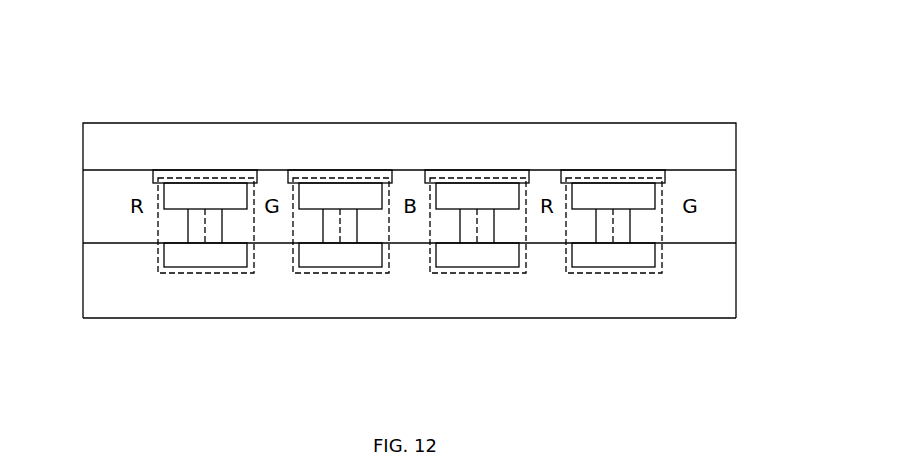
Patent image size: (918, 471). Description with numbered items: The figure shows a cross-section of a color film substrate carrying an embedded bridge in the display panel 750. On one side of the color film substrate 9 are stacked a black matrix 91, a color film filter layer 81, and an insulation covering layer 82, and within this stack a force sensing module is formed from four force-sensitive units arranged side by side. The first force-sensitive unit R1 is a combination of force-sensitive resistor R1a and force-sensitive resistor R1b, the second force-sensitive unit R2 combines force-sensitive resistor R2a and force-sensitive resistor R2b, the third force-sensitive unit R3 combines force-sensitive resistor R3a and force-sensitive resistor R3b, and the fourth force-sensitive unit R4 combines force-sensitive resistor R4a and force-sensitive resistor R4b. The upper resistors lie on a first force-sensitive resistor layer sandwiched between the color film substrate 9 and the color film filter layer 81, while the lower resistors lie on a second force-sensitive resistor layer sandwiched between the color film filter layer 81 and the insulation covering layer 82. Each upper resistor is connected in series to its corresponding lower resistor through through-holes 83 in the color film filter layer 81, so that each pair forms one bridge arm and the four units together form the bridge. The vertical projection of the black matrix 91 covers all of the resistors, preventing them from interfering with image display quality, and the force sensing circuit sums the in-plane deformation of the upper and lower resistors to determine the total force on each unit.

The display panel 750 is at (190, 50).
The color film substrate 9 is at (715, 145).
The color film filter layer 81 is at (715, 210).
The insulation covering layer 82 is at (715, 282).
The through-hole 83 is at (35, 225).
The black matrix 91 is at (512, 124).
The first force-sensitive unit R1 is at (206, 270).
The second force-sensitive unit R2 is at (341, 270).
The third force-sensitive unit R3 is at (478, 270).
The fourth force-sensitive unit R4 is at (614, 270).
The force-sensitive resistor R1a is at (205, 171).
The force-sensitive resistor R1b is at (205, 280).
The force-sensitive resistor R2a is at (340, 171).
The force-sensitive resistor R2b is at (340, 280).
The force-sensitive resistor R3a is at (477, 171).
The force-sensitive resistor R3b is at (477, 280).
The force-sensitive resistor R4a is at (613, 171).
The force-sensitive resistor R4b is at (613, 280).